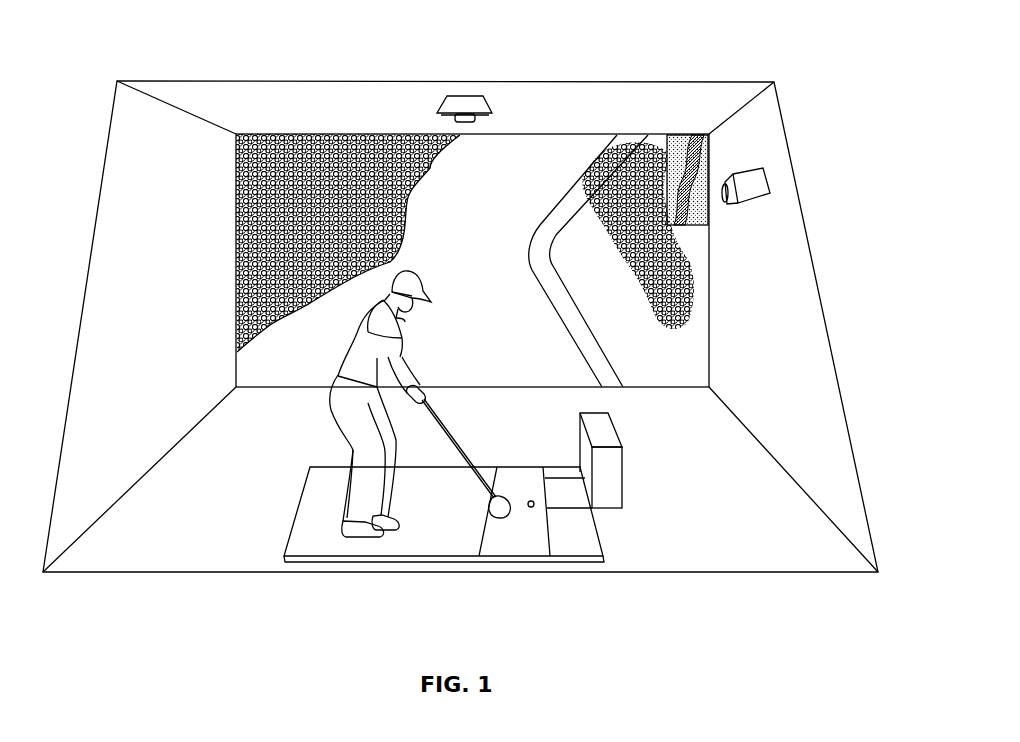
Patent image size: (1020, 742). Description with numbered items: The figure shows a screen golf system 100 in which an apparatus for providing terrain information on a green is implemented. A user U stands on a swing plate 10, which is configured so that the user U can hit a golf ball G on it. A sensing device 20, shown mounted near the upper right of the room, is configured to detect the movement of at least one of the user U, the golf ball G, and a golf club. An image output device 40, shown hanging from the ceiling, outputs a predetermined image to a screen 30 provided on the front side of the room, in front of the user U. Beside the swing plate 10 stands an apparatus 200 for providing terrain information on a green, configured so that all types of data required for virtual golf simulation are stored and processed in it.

The screen golf system 100 is at (862, 70).
The swing plate 10 is at (418, 560).
The sensing device 20 is at (752, 167).
The screen 30 is at (236, 273).
The image output device 40 is at (492, 108).
The apparatus for providing terrain information on a green 200 is at (622, 477).
The user U is at (330, 403).
The golf ball G is at (500, 495).